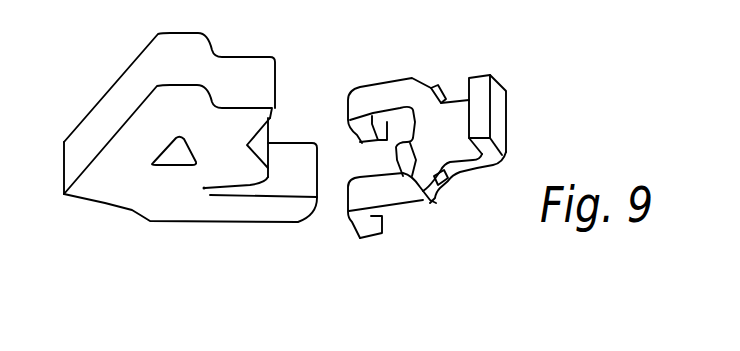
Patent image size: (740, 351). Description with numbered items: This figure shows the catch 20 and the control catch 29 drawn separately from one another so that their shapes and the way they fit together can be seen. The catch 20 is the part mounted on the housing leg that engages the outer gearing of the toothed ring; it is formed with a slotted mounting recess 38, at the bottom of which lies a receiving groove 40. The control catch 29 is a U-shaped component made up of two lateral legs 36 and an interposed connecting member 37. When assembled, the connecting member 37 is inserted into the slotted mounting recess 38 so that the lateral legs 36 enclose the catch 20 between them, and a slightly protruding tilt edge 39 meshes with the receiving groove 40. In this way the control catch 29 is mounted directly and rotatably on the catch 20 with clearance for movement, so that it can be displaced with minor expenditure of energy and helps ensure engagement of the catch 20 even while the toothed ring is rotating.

The catch 20 is at (147, 130).
The control catch 29 is at (440, 123).
The lateral legs 36 is at (380, 190).
The connecting member 37 is at (421, 137).
The slotted mounting recess 38 is at (247, 190).
The tilt edge 39 is at (430, 203).
The receiving groove 40 is at (208, 192).